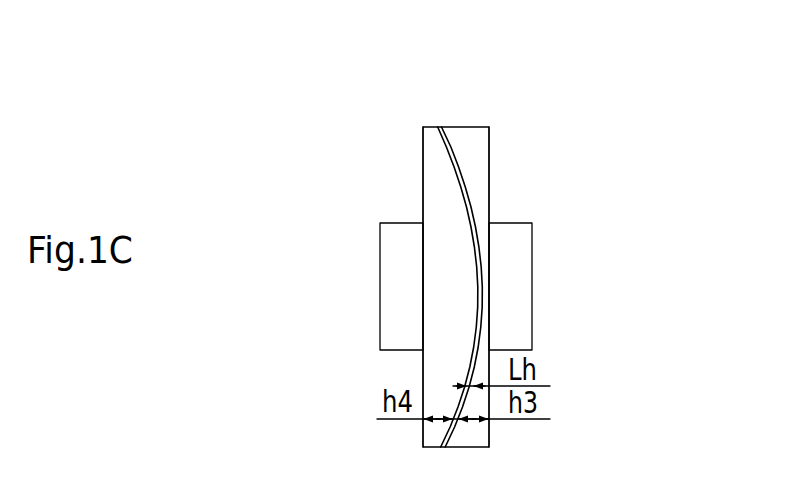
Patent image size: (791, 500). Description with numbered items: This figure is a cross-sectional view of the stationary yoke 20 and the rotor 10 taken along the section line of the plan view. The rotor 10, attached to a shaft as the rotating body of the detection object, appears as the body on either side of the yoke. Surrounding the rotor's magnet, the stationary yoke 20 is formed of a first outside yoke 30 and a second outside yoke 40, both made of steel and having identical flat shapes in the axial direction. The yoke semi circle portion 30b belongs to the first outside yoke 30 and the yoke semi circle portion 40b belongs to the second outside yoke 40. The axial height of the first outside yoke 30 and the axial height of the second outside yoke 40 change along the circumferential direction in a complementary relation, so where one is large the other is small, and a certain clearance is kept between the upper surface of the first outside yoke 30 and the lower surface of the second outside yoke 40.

The rotor 10 is at (382, 352).
The stationary yoke 20 is at (502, 52).
The first outside yoke 30 is at (463, 125).
The second outside yoke 40 is at (430, 125).
The yoke semi circle portion 30b is at (477, 160).
The yoke semi circle portion 40b is at (437, 167).